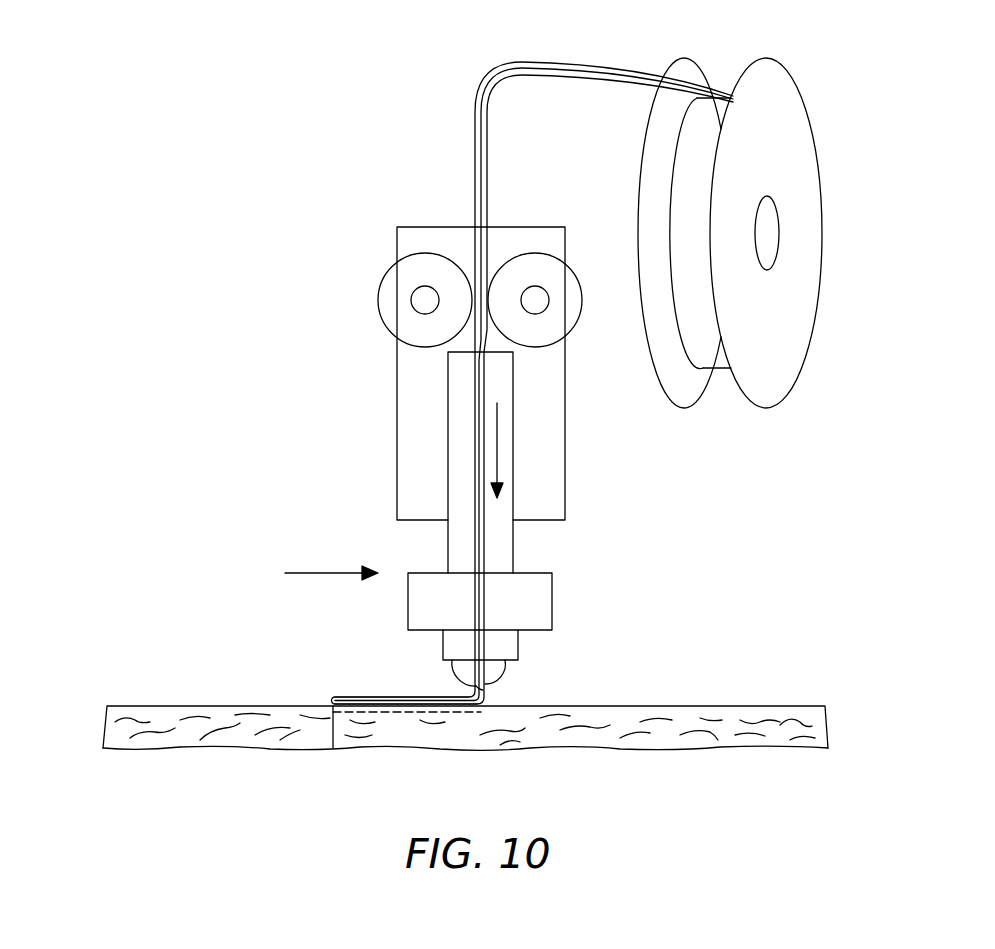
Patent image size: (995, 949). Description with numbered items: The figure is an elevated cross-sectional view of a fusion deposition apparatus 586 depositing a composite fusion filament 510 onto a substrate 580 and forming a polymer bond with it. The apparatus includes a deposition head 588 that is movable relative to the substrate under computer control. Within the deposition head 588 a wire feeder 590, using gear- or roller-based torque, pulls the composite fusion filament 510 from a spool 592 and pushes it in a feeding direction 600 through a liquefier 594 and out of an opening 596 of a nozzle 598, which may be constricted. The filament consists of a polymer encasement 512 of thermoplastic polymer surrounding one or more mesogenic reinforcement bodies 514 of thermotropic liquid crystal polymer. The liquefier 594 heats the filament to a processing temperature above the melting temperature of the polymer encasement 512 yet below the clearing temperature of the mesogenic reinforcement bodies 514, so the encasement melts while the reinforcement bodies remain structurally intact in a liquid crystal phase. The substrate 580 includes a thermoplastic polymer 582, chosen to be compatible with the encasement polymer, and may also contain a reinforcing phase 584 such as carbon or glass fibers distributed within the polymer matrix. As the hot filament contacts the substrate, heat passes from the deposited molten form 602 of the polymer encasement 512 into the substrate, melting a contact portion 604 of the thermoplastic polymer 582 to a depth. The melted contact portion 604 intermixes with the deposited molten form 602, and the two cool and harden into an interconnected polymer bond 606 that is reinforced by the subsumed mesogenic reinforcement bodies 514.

The composite fusion filament 510 is at (533, 362).
The polymer encasement 512 is at (476, 130).
The mesogenic reinforcement bodies 514 is at (490, 160).
The substrate 580 is at (422, 738).
The thermoplastic polymer 582 is at (120, 745).
The reinforcing phase 584 is at (232, 736).
The fusion deposition apparatus 586 is at (460, 426).
The deposition head 588 is at (375, 414).
The wire feeder 590 is at (407, 367).
The spool 592 is at (790, 127).
The liquefier 594 is at (553, 598).
The opening 596 is at (488, 682).
The nozzle 598 is at (512, 672).
The feeding direction 600 is at (497, 447).
The deposited molten form 602 is at (346, 694).
The contact portion 604 is at (407, 722).
The polymer bond 606 is at (333, 742).